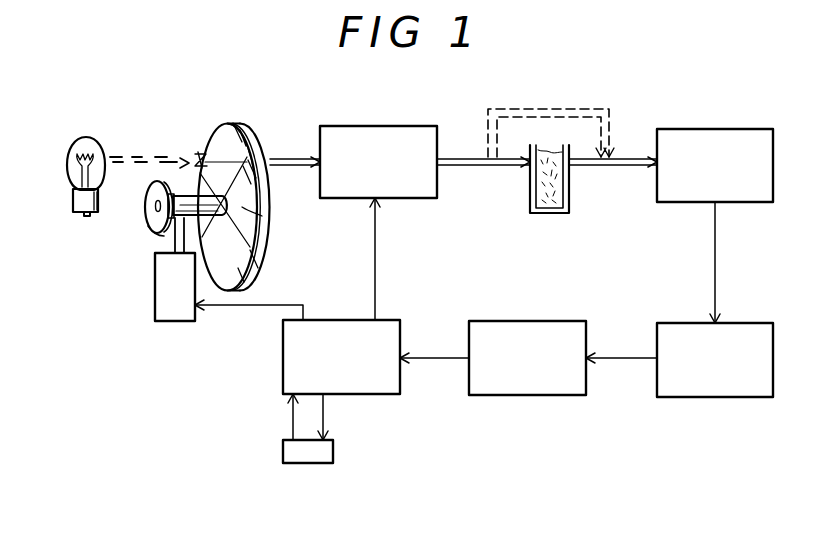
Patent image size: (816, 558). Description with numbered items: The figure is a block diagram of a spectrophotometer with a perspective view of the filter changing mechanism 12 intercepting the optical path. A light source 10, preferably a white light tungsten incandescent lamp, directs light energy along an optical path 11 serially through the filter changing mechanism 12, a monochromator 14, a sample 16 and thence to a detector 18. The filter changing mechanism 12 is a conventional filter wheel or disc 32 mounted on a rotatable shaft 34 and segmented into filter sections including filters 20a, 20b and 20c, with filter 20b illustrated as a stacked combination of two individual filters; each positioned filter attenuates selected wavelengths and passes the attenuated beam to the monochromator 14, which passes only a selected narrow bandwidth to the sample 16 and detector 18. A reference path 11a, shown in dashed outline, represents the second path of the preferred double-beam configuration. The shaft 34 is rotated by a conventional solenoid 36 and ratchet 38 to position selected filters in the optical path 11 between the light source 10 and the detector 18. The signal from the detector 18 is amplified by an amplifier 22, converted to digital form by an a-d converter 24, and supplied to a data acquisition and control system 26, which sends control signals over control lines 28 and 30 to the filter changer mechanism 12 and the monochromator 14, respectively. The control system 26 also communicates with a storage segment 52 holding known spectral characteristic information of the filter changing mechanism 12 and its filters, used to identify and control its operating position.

The light source 10 is at (77, 138).
The optical path 11 is at (120, 153).
The reference path 11a is at (521, 107).
The filter changing mechanism 12 is at (247, 93).
The monochromator 14 is at (398, 125).
The sample 16 is at (550, 157).
The detector 18 is at (730, 129).
The filter 20a is at (240, 276).
The filter 20b is at (197, 162).
The filter 20c is at (246, 135).
The amplifier 22 is at (723, 397).
The a-d converter 24 is at (547, 396).
The data acquisition and control system 26 is at (358, 396).
The control line 28 is at (258, 307).
The control line 30 is at (376, 262).
The filter wheel or disc 32 is at (236, 123).
The rotatable shaft 34 is at (164, 183).
The solenoid 36 is at (173, 322).
The ratchet 38 is at (150, 220).
The storage segment 52 is at (303, 463).